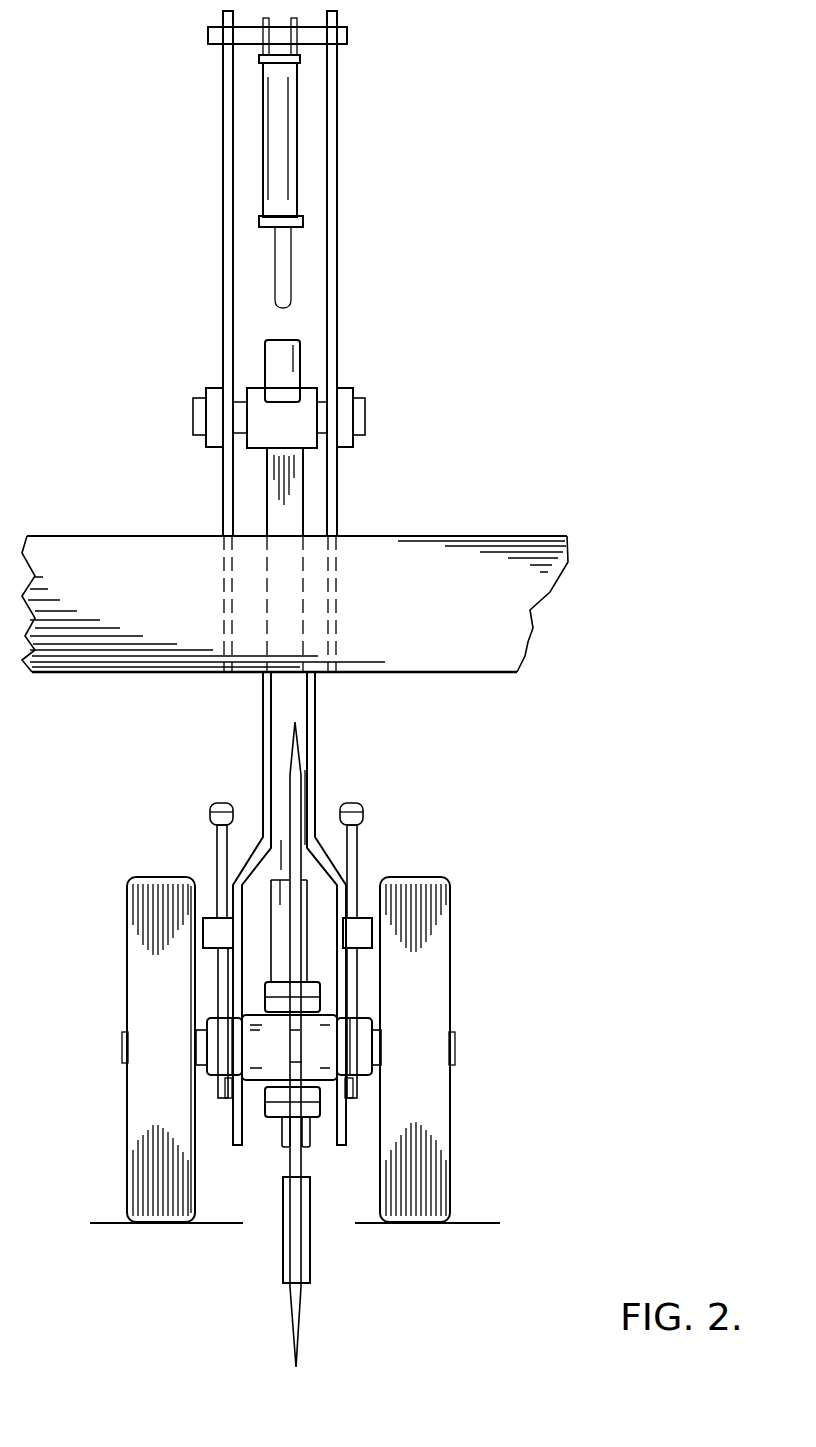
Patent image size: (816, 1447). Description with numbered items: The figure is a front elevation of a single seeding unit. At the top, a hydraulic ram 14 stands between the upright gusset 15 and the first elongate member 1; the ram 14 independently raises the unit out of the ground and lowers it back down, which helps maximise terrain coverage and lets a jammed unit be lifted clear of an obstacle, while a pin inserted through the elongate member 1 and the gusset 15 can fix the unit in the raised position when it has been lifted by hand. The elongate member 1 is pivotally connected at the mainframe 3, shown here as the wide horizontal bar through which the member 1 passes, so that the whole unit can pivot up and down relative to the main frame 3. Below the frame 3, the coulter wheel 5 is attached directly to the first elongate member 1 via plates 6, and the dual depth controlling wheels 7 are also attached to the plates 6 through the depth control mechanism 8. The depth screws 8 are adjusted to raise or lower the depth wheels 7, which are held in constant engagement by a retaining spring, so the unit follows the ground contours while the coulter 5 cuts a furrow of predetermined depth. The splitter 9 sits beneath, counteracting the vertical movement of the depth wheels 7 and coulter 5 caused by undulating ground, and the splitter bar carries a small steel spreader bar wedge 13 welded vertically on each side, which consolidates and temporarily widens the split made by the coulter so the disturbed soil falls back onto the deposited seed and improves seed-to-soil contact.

The first elongate member 1 is at (300, 500).
The mainframe 3 is at (462, 537).
The coulter wheel 5 is at (298, 966).
The plates 6 is at (272, 698).
The depth controlling wheels 7 is at (127, 907).
The depth control mechanism 8 is at (210, 812).
The splitter 9 is at (310, 1140).
The spreader bar wedge 13 is at (310, 1268).
The hydraulic rams 14 is at (295, 199).
The gusset 15 is at (233, 328).